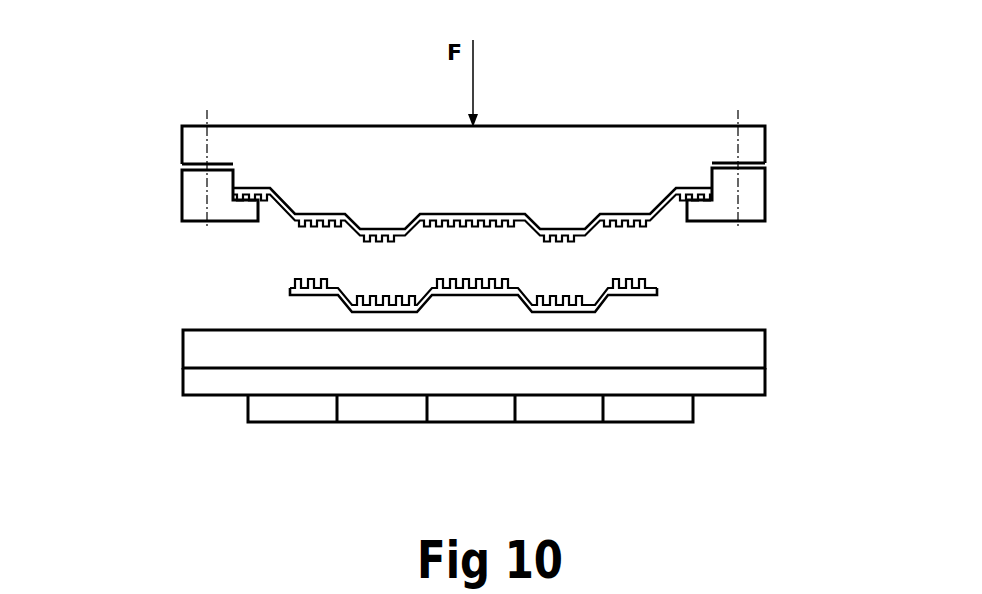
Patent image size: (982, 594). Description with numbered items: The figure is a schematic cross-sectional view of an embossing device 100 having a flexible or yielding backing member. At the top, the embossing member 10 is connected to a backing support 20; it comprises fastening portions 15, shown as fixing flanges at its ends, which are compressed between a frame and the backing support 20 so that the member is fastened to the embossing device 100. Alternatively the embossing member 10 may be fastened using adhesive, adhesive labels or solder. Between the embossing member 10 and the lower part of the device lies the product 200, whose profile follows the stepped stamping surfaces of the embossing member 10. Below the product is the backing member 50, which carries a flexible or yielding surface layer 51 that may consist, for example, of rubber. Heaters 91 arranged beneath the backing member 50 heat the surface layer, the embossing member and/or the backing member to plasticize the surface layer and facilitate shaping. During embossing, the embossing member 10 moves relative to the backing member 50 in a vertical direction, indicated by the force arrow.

The embossing member 10 is at (498, 210).
The fastening portion 15 is at (275, 173).
The backing support 20 is at (181, 139).
The backing member 50 is at (182, 393).
The surface layer 51 is at (182, 354).
The heaters 91 is at (298, 423).
The embossing device 100 is at (152, 447).
The product 200 is at (289, 291).